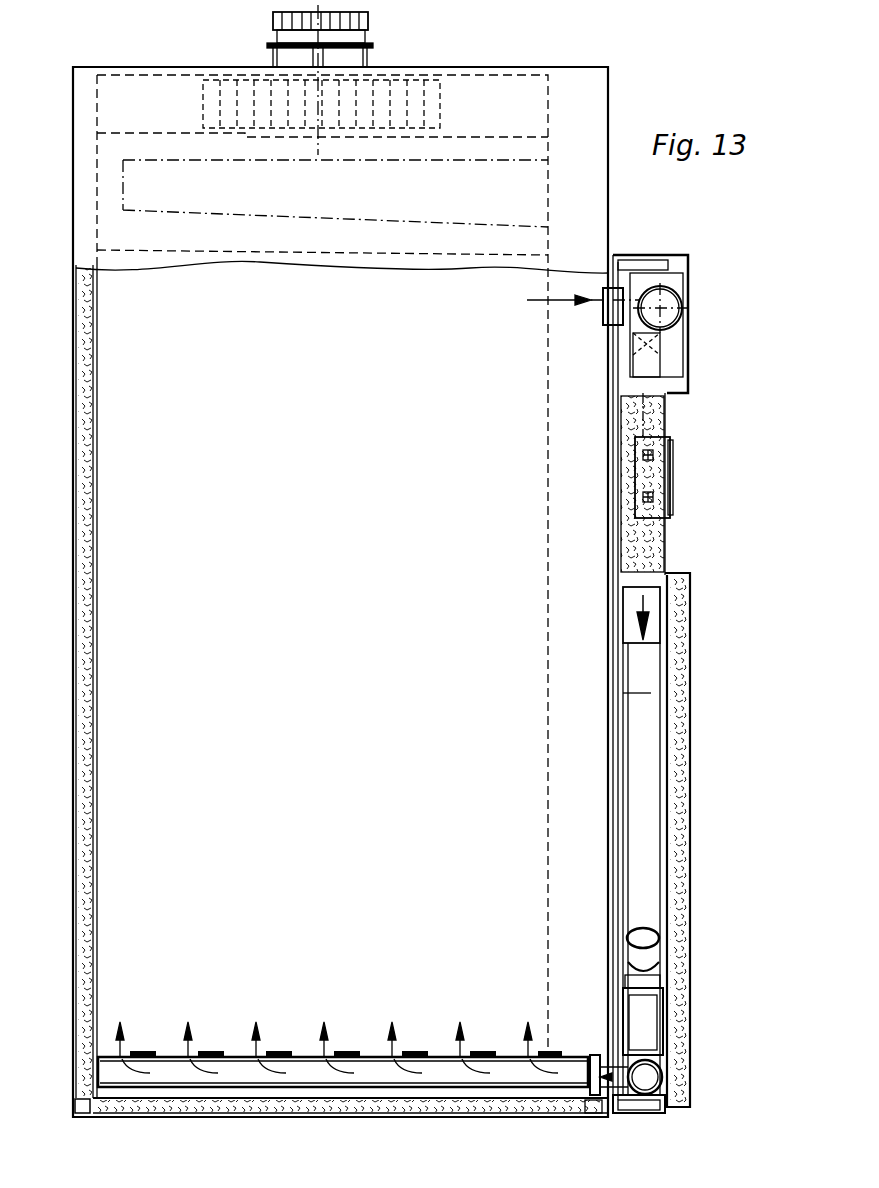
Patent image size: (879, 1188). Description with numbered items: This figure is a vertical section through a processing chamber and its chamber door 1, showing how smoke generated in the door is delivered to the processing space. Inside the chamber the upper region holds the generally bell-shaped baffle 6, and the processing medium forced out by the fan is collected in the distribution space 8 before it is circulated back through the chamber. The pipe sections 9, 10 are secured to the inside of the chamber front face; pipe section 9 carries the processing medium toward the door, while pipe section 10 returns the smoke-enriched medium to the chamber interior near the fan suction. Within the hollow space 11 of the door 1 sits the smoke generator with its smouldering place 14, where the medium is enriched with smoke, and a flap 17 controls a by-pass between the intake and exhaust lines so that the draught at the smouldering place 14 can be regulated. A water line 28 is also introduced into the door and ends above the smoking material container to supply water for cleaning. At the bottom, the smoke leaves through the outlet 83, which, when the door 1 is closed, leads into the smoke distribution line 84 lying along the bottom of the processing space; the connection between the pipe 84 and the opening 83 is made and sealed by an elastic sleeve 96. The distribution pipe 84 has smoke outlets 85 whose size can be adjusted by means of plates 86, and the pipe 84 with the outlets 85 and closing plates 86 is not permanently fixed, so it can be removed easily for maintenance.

The chamber door 1 is at (622, 411).
The baffle 6 is at (668, 313).
The distribution space 8 is at (610, 308).
The pipe section 9 is at (648, 602).
The pipe section 10 is at (645, 982).
The hollow space 11 is at (655, 943).
The smouldering place 14 is at (642, 1025).
The flap 17 is at (655, 1077).
The water line 28 is at (651, 470).
The outlet 83 is at (620, 1080).
The smoke distribution line 84 is at (377, 1128).
The smoke outlets 85 is at (388, 1052).
The plates 86 is at (422, 1050).
The elastic sleeve 96 is at (593, 1062).